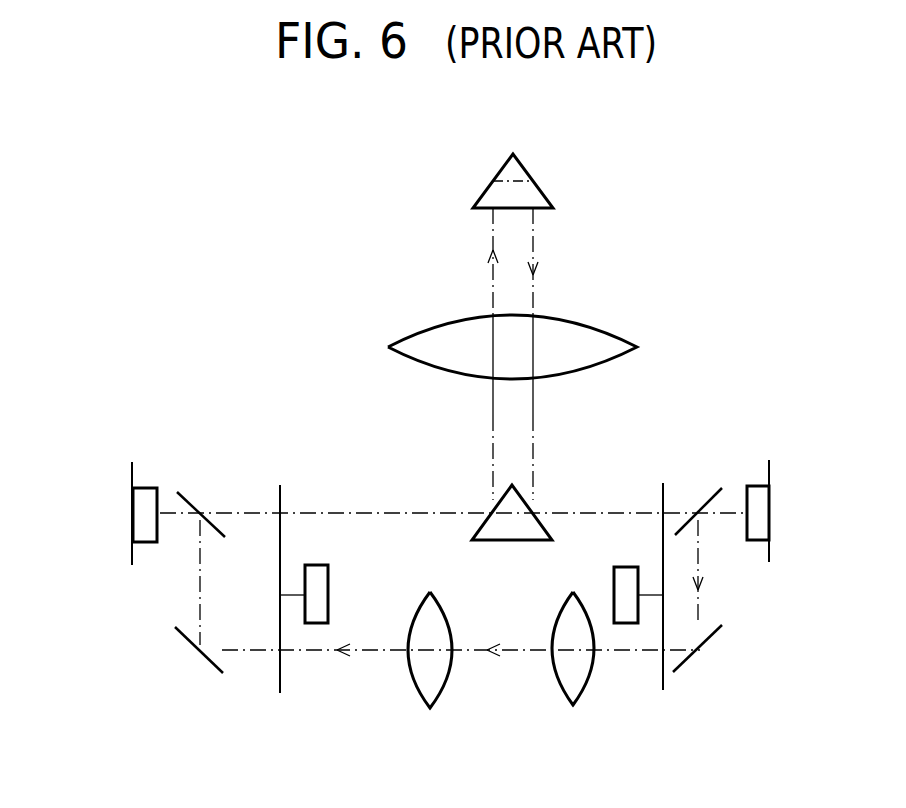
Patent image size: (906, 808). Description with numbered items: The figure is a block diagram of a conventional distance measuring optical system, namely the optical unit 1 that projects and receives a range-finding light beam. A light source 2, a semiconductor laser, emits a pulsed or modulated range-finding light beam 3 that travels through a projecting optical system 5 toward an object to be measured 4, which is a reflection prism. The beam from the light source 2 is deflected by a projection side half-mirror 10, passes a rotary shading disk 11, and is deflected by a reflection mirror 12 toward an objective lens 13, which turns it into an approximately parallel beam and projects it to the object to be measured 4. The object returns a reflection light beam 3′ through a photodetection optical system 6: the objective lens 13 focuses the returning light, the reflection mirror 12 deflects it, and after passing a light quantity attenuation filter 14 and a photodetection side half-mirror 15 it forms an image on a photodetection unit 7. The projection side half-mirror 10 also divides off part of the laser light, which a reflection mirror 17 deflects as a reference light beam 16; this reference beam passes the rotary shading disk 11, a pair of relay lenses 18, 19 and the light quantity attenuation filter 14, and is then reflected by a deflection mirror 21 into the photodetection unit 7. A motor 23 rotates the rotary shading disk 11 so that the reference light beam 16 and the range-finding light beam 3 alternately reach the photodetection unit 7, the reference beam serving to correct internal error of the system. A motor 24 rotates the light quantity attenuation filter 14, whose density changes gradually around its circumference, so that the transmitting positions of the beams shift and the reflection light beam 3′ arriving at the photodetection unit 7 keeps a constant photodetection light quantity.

The optical unit 1 is at (437, 308).
The light source 2 is at (762, 505).
The range-finding light beam 3 is at (532, 402).
The reflection light beam 3′ is at (492, 450).
The object to be measured 4 is at (502, 176).
The projecting optical system 5 is at (595, 480).
The photodetection optical system 6 is at (328, 432).
The photodetection unit 7 is at (137, 500).
The projection side half-mirror 10 is at (720, 488).
The rotary shading disk 11 is at (666, 685).
The reflection mirror 12 is at (472, 535).
The objective lens 13 is at (602, 328).
The light quantity attenuation filter 14 is at (282, 495).
The photodetection side half-mirror 15 is at (191, 502).
The reference light beam 16 is at (700, 603).
The reflection mirror 17 is at (705, 640).
The relay lens 18 is at (560, 693).
The relay lens 19 is at (418, 695).
The deflection mirror 21 is at (207, 657).
The motor 23 is at (625, 623).
The motor 24 is at (312, 623).